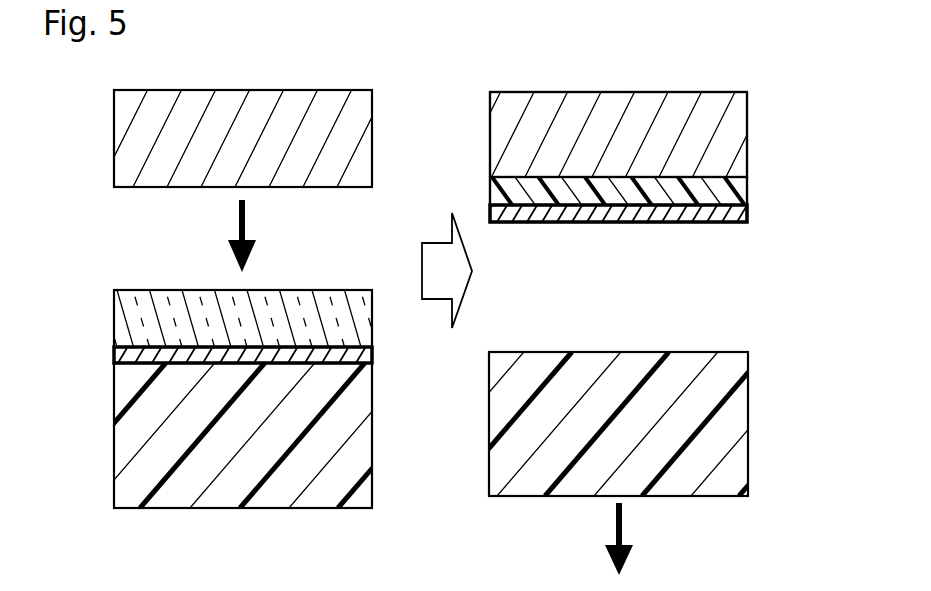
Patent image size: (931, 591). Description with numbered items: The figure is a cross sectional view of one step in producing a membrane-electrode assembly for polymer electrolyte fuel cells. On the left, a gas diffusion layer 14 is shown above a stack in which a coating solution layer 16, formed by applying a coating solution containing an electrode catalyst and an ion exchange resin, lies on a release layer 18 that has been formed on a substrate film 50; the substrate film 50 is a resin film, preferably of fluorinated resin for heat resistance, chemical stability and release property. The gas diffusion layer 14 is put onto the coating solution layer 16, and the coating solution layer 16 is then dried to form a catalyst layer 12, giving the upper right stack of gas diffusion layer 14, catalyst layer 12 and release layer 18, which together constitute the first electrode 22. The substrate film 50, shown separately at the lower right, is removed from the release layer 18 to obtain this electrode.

The gas diffusion layer 14 is at (357, 135).
The coating solution layer 16 is at (357, 325).
The release layer 18 is at (357, 357).
The catalyst layer 12 is at (735, 193).
The first electrode 22 is at (807, 105).
The substrate film 50 is at (357, 435).